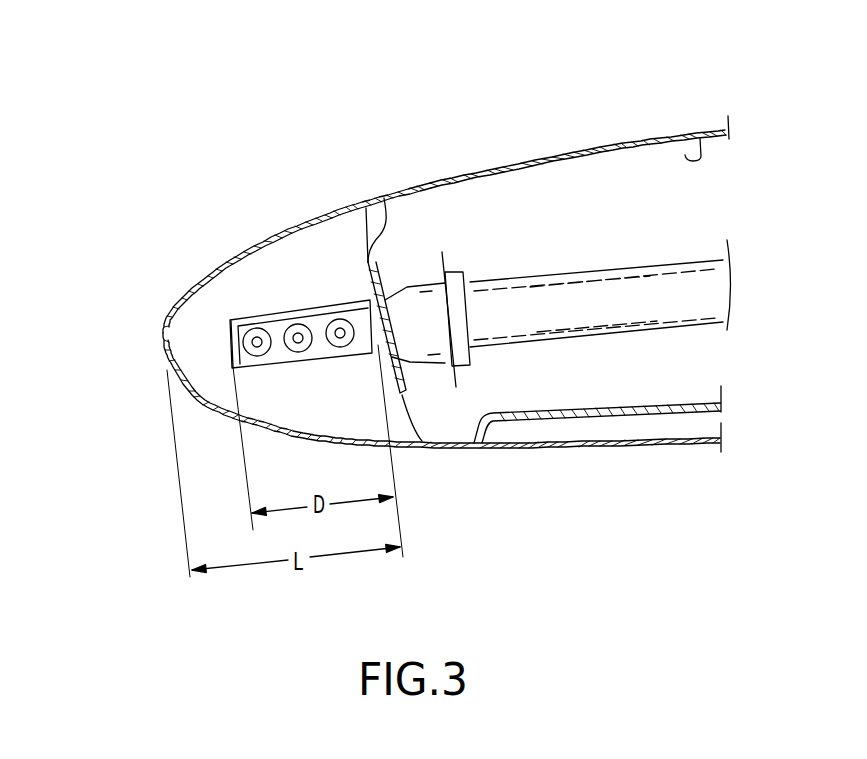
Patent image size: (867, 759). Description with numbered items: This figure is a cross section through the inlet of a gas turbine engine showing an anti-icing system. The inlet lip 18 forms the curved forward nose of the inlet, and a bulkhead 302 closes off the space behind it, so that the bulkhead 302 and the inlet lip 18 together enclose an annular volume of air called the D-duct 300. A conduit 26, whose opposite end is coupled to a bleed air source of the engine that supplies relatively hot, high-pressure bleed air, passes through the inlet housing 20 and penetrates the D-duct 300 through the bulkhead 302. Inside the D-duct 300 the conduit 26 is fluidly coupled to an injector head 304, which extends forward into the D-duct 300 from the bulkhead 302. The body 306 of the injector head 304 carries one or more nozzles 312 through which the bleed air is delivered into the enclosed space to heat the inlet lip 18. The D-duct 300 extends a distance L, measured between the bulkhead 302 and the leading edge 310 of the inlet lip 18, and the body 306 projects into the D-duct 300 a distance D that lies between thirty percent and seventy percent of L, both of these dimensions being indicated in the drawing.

The inlet lip 18 is at (338, 211).
The inlet housing 20 is at (589, 143).
The conduit 26 is at (635, 263).
The D-duct 300 is at (372, 124).
The bulkhead 302 is at (377, 210).
The injector head 304 is at (270, 311).
The body 306 is at (231, 344).
The leading edge 310 is at (164, 351).
The nozzles 312 is at (339, 319).